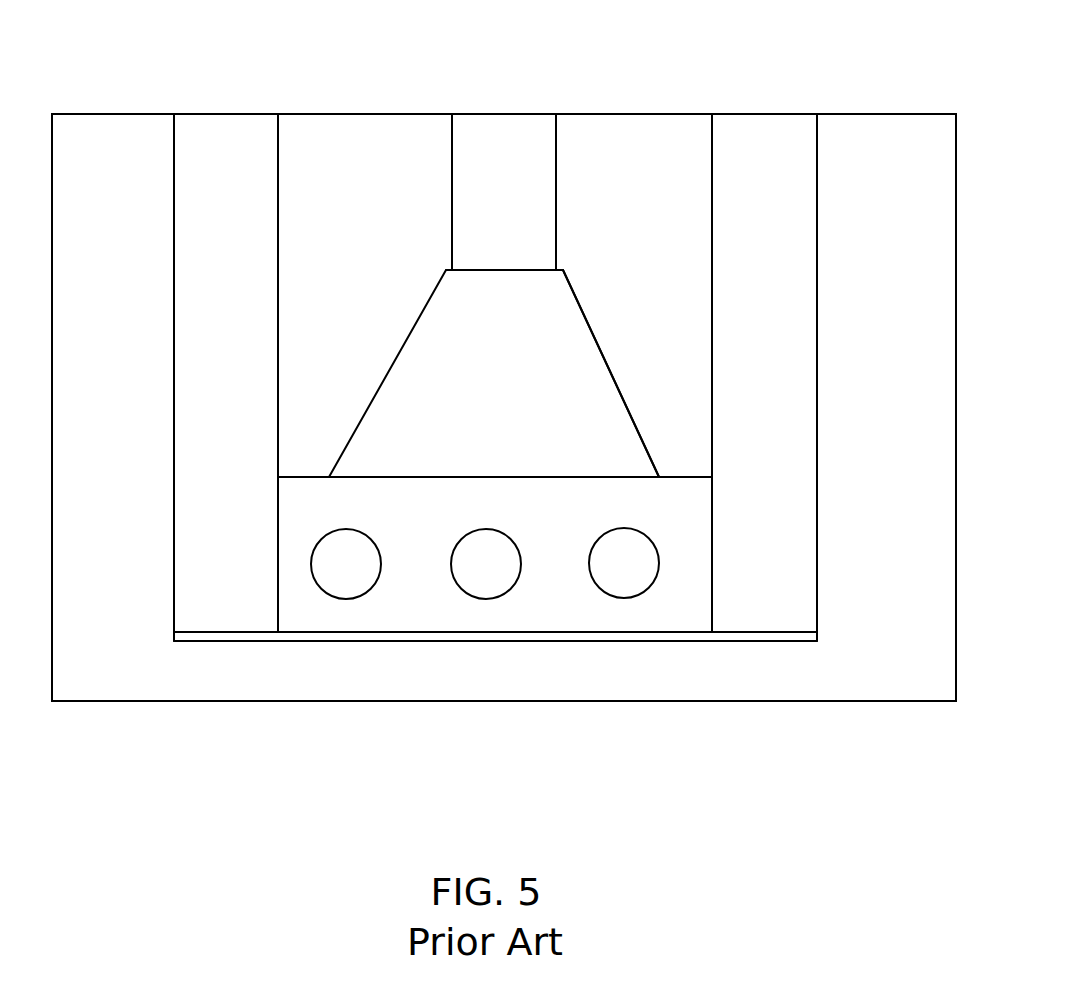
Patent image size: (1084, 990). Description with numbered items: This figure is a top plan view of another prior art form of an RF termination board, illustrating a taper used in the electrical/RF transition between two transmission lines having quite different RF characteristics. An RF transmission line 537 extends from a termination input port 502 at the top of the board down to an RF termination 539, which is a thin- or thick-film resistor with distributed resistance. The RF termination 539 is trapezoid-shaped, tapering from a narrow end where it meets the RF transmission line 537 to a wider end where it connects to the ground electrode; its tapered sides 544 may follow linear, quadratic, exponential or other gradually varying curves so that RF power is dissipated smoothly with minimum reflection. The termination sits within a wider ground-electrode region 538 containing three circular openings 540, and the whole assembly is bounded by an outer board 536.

The termination input port 502 is at (494, 114).
The outer housing 536 is at (867, 647).
The RF transmission line 537 is at (503, 208).
The intermediate layer 538 is at (258, 615).
The RF termination 539 is at (468, 356).
The holes 540 is at (624, 563).
The sloped wall 544 is at (589, 323).